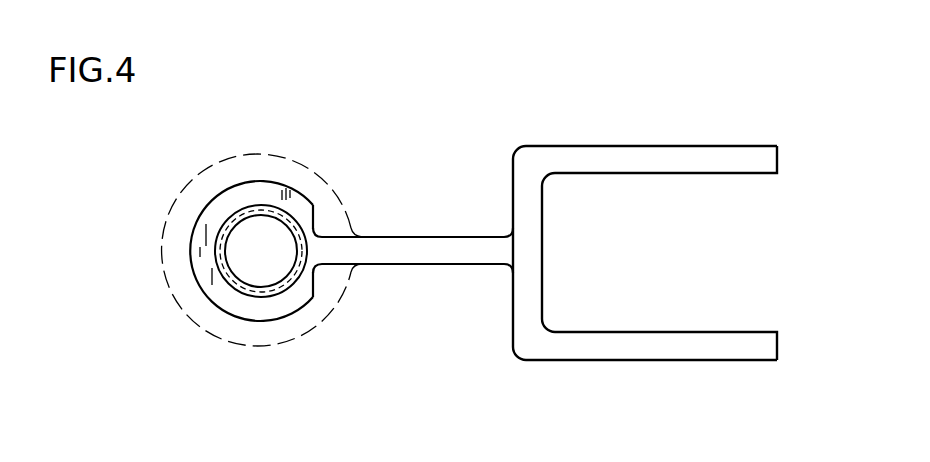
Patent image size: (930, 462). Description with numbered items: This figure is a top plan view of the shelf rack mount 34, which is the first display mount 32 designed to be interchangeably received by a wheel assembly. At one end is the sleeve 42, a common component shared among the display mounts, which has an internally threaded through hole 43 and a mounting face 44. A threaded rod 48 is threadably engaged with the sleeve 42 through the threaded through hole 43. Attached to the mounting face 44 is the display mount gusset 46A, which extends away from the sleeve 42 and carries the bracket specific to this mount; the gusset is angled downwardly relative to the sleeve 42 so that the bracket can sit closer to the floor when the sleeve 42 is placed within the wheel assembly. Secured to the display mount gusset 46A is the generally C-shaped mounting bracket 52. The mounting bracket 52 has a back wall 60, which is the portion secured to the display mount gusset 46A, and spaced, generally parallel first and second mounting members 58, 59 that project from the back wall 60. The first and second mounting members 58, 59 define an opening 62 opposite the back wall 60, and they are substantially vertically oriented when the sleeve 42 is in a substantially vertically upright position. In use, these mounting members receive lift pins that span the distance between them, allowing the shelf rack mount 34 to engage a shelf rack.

The display mount 32 is at (410, 190).
The shelf rack mount 34 is at (583, 366).
The sleeve 42 is at (263, 303).
The internally threaded through hole 43 is at (259, 210).
The mounting face 44 is at (318, 216).
The display mount gusset 46A is at (401, 266).
The threaded rod 48 is at (217, 261).
The mounting bracket 52 is at (623, 140).
The first mounting member 58 is at (690, 349).
The second mounting member 59 is at (695, 158).
The back wall 60 is at (512, 203).
The opening 62 is at (743, 254).